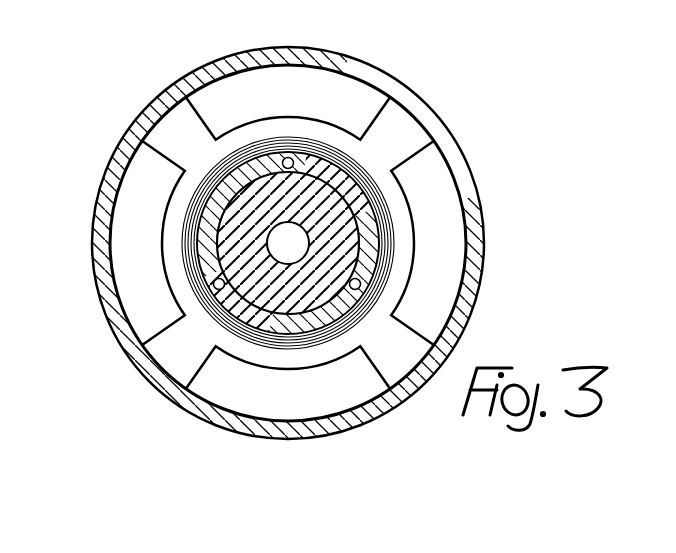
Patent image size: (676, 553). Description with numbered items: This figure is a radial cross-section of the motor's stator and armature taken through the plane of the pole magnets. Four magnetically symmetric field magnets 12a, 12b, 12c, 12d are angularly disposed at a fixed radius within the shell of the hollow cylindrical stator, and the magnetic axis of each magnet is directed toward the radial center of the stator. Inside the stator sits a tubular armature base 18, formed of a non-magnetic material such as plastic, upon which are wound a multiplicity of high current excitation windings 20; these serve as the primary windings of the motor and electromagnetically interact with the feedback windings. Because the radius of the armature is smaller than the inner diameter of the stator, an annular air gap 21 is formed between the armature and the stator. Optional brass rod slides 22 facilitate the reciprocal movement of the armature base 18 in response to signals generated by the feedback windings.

The field magnet 12a is at (340, 93).
The field magnet 12b is at (440, 190).
The field magnet 12c is at (342, 402).
The field magnet 12d is at (128, 207).
The tubular armature base 18 is at (343, 303).
The excitation windings 20 is at (360, 177).
The air gap 21 is at (400, 275).
The brass rod slides 22 is at (222, 312).